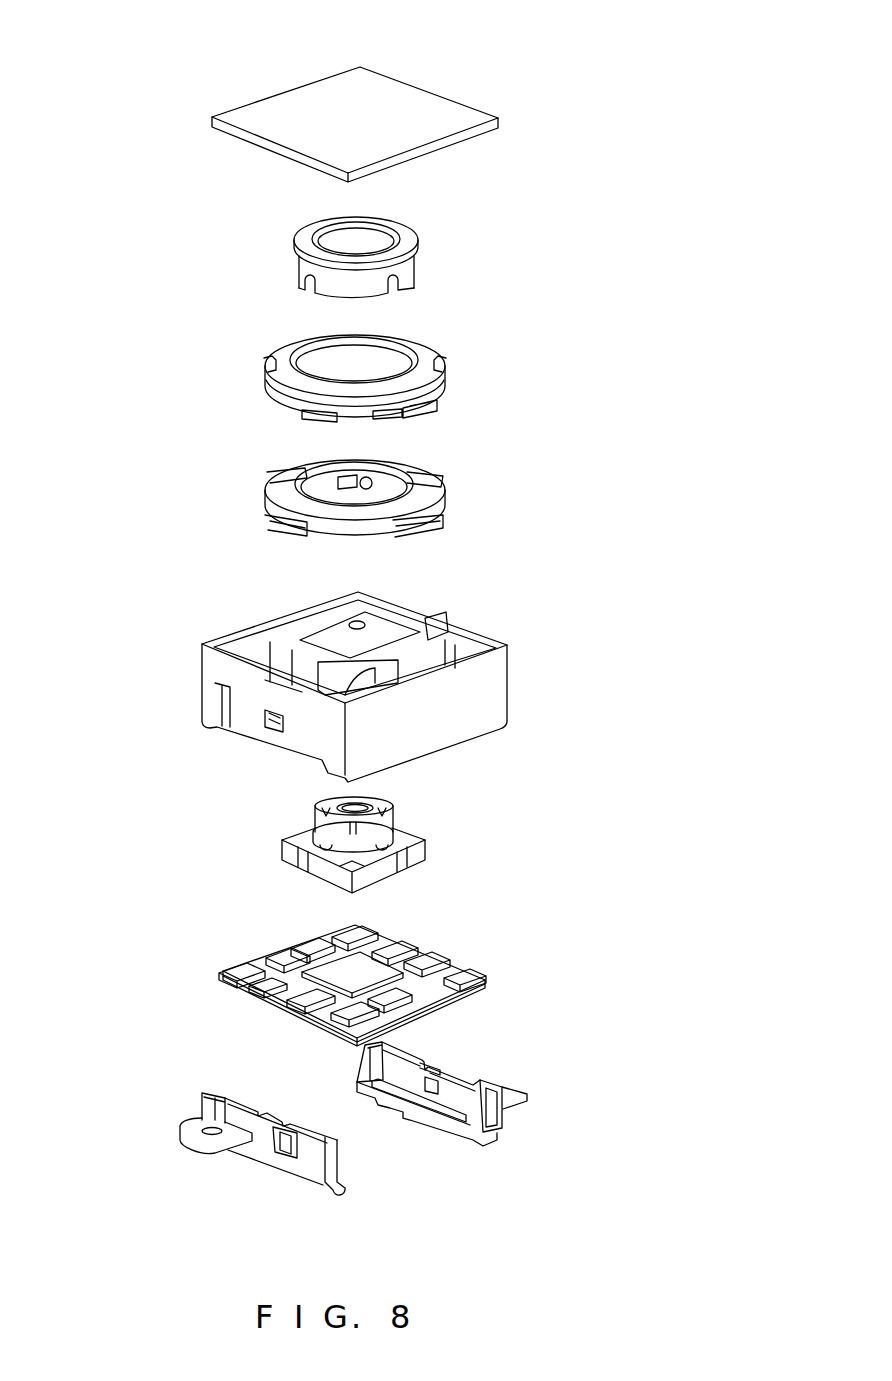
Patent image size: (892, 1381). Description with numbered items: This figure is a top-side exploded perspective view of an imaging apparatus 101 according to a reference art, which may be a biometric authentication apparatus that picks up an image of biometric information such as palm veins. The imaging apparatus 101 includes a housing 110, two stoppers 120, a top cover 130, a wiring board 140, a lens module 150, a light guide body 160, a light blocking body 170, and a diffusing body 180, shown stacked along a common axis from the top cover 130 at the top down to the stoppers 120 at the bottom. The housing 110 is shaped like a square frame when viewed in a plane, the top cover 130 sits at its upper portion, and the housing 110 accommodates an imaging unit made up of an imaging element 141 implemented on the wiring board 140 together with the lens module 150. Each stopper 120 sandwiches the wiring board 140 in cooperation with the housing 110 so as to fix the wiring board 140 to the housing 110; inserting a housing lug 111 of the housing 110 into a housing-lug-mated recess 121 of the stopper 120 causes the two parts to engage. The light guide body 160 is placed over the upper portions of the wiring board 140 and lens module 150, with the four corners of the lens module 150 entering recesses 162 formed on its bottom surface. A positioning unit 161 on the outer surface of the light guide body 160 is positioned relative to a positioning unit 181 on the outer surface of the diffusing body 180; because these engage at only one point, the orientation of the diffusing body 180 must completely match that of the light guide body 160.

The imaging apparatus 101 is at (138, 116).
The top cover 130 is at (290, 103).
The light blocking body 170 is at (292, 236).
The diffusing body 180 is at (267, 368).
The positioning unit 181 is at (277, 407).
The light guide body 160 is at (267, 495).
The positioning unit 161 is at (282, 533).
The recess 162 is at (368, 485).
The housing 110 is at (230, 627).
The housing lug 111 is at (267, 727).
The lens module 150 is at (313, 821).
The wiring board 140 is at (263, 962).
The imaging element 141 is at (383, 962).
The stopper 120 is at (465, 1075).
The housing-lug-mated recess 121 is at (430, 1088).